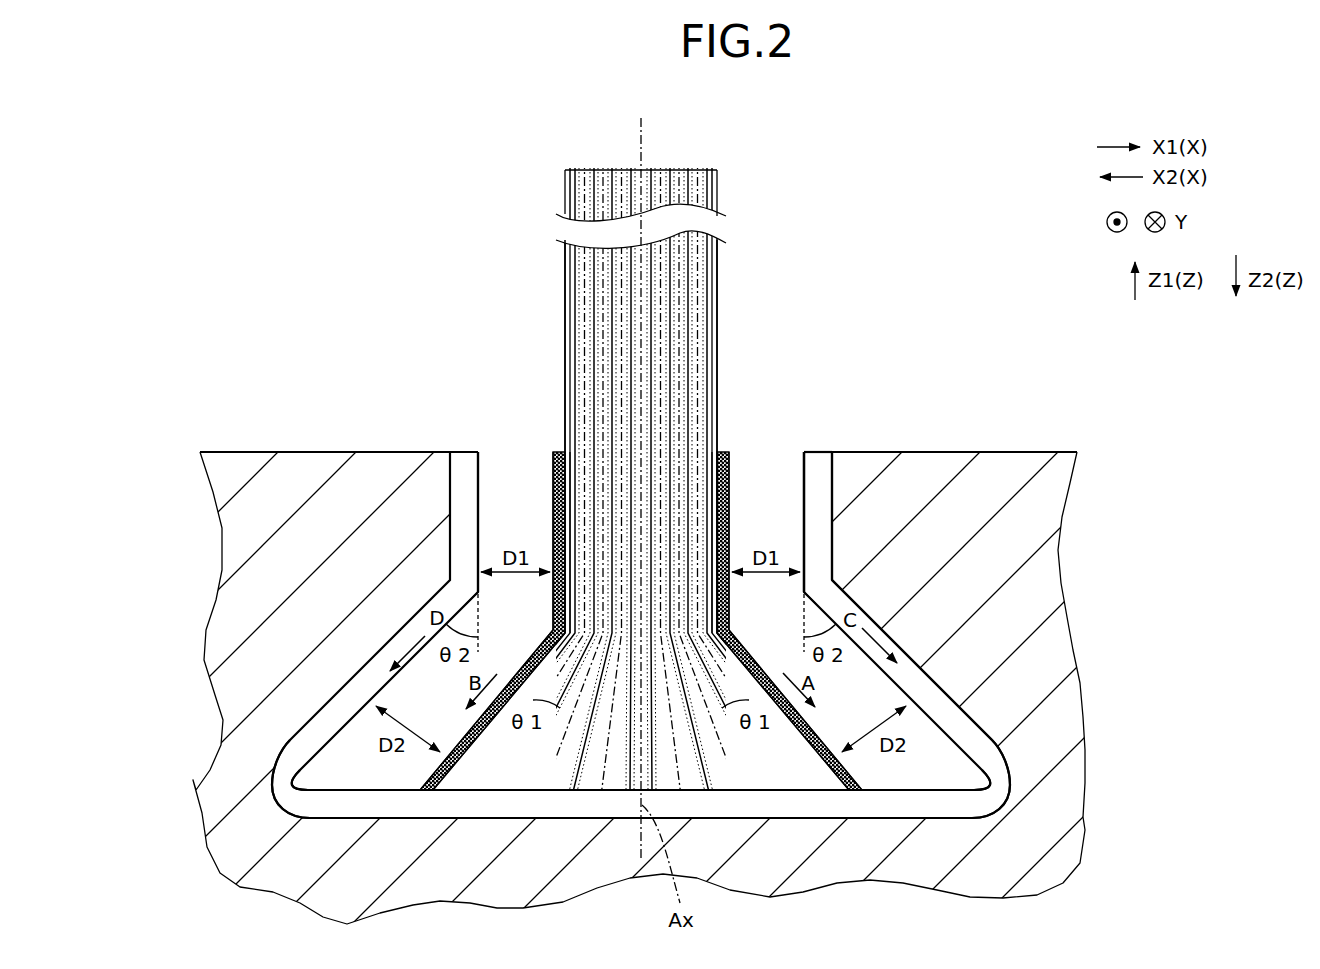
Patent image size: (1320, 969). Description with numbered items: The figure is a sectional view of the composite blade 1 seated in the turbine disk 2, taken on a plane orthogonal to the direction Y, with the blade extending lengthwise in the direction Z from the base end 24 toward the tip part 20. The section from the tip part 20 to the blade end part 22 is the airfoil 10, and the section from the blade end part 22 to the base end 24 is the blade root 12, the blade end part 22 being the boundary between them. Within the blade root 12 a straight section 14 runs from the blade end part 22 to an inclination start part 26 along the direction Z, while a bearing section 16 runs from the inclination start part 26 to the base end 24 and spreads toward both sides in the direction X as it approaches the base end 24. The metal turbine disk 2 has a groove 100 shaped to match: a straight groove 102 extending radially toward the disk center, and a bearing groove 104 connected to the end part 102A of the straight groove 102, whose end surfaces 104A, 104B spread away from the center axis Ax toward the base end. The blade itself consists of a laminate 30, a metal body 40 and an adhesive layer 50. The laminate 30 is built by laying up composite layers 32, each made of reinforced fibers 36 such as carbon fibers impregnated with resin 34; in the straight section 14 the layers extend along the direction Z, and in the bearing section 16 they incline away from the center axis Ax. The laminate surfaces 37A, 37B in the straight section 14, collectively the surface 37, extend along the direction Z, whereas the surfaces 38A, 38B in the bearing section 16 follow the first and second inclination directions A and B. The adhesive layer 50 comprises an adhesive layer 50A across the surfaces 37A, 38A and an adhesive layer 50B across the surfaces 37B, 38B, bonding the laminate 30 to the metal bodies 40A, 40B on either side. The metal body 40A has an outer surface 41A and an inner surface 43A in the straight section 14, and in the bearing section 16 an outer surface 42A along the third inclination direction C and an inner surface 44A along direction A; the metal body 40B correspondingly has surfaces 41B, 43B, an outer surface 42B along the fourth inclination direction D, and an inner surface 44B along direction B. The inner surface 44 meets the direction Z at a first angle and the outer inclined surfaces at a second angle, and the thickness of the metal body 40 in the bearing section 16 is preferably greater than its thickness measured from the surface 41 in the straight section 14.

The composite blade 1 is at (870, 198).
The turbine disk 2 is at (1048, 444).
The airfoil 10 is at (641, 476).
The blade root 12 is at (988, 550).
The straight section 14 is at (820, 478).
The bearing section 16 is at (927, 678).
The tip part 20 is at (732, 178).
The blade end part 22 is at (824, 434).
The base end 24 is at (848, 800).
The inclination start part 26 is at (466, 588).
The laminate 30 is at (561, 370).
The composite layer 32 is at (618, 306).
The resin 34 is at (580, 340).
The reinforced fibers 36 is at (572, 310).
The surface 37 is at (641, 542).
The surface 37A is at (716, 526).
The surface 37B is at (568, 524).
The surface 38A is at (828, 758).
The surface 38B is at (456, 756).
The metal body 40 is at (641, 586).
The metal body 40A is at (960, 470).
The metal body 40B is at (323, 470).
The surface 41 is at (630, 454).
The surface 41A is at (815, 463).
The surface 41B is at (466, 472).
The surface 42A is at (746, 626).
The surface 42B is at (536, 627).
The surface 43A is at (732, 490).
The surface 43B is at (552, 493).
The surface 44 is at (639, 776).
The surface 44A is at (868, 803).
The surface 44B is at (298, 742).
The adhesive layer 50 is at (641, 590).
The adhesive layer 50A is at (734, 445).
The adhesive layer 50B is at (553, 445).
The groove 100 is at (662, 657).
The straight groove 102 is at (826, 530).
The end part 102A is at (826, 568).
The bearing groove 104 is at (997, 764).
The end surface 104A is at (984, 736).
The end surface 104B is at (330, 735).